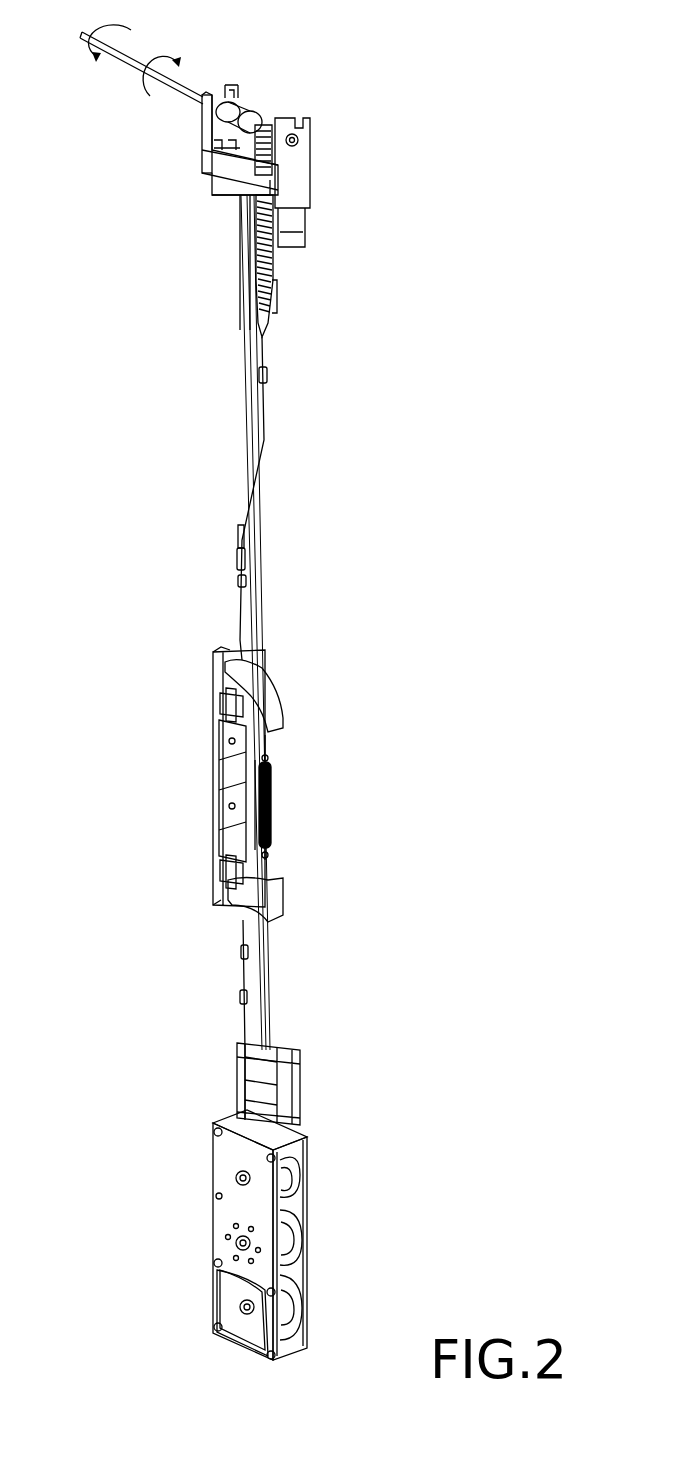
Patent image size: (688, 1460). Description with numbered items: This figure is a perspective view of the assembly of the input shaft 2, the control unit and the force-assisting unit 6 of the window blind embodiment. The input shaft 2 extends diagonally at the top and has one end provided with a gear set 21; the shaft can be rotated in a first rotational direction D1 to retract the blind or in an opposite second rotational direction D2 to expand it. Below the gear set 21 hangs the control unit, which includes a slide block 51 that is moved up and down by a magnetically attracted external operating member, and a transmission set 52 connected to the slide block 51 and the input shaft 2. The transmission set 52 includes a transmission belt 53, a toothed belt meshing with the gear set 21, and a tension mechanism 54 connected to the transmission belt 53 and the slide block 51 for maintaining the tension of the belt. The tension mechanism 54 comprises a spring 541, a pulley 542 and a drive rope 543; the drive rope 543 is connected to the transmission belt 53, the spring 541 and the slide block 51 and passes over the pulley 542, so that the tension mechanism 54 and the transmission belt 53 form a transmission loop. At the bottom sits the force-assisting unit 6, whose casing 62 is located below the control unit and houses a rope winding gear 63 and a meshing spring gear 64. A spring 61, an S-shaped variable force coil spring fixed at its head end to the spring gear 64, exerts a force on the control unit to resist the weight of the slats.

The input shaft 2 is at (257, 125).
The gear set 21 is at (273, 133).
The transmission set 52 is at (276, 436).
The transmission belt 53 is at (247, 260).
The slide block 51 is at (207, 676).
The tension mechanism 54 is at (351, 797).
The spring 541 is at (275, 797).
The pulley 542 is at (243, 1082).
The drive rope 543 is at (263, 622).
The force-assisting unit 6 is at (258, 1235).
The spring 61 is at (288, 1308).
The casing 62 is at (223, 1223).
The rope winding gear 63 is at (290, 1178).
The spring gear 64 is at (287, 1243).
The first rotational direction D1 is at (141, 64).
The second rotational direction D2 is at (167, 60).